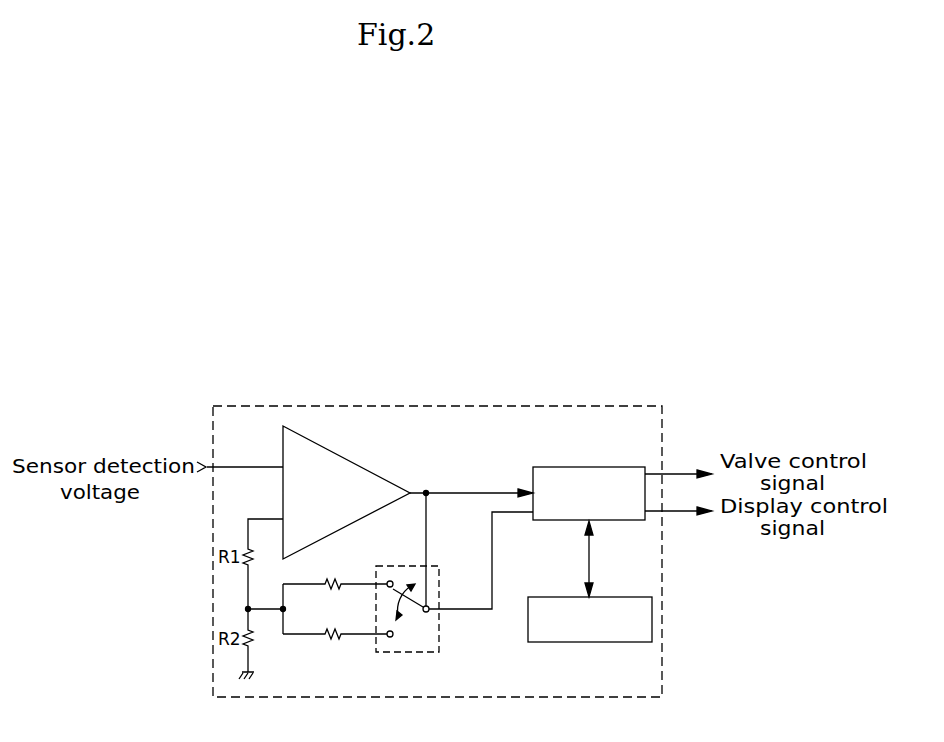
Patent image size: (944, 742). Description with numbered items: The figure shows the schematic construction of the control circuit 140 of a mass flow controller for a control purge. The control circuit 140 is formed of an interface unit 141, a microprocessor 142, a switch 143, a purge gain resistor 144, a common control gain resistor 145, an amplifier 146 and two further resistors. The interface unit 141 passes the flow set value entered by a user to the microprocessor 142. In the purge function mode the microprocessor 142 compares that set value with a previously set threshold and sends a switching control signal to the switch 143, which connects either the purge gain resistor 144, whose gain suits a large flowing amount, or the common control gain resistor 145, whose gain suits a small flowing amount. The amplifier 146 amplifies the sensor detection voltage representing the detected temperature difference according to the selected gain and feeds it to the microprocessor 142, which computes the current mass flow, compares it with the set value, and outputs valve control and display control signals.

The control circuit 140 is at (477, 406).
The interface unit 141 is at (590, 642).
The microprocessor 142 is at (555, 467).
The switch 143 is at (440, 566).
The purge gain resistor 144 is at (332, 638).
The common control gain resistor 145 is at (332, 580).
The amplifier 146 is at (367, 468).